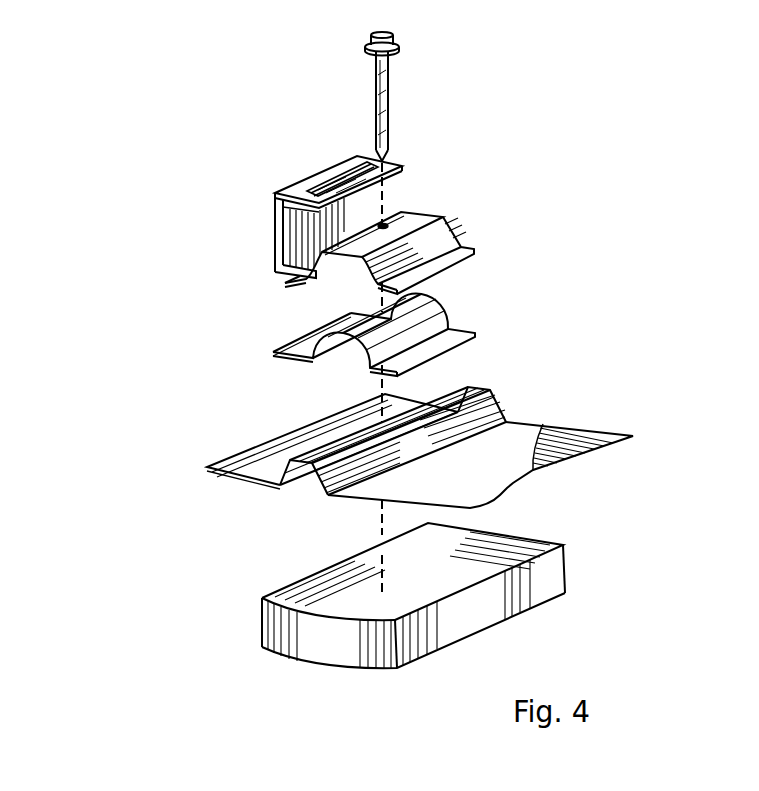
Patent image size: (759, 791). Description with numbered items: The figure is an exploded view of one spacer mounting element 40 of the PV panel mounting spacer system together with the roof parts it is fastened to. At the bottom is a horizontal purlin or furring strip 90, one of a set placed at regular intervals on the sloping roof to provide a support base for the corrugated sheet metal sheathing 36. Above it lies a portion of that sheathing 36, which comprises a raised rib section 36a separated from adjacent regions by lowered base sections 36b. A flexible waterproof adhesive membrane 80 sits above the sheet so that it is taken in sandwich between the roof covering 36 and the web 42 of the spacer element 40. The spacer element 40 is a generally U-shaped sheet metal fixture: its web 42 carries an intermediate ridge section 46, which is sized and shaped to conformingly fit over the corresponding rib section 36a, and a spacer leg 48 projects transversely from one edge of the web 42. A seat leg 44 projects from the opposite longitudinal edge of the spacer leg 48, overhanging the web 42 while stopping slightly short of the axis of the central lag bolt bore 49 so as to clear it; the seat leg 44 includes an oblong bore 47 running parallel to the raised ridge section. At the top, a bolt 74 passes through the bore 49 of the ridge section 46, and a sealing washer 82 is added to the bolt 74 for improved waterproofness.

The corrugated sheet metal sheathing 36 is at (401, 432).
The raised rib section 36a is at (500, 388).
The lowered base section 36b is at (240, 452).
The spacer mounting element 40 is at (260, 204).
The web 42 is at (439, 230).
The seat leg 44 is at (288, 189).
The intermediate ridge section 46 is at (432, 235).
The oblong bore 47 is at (340, 178).
The spacer leg 48 is at (289, 247).
The central lag bolt bore 49 is at (385, 224).
The bolt 74 is at (442, 84).
The flexible waterproof adhesive membrane 80 is at (430, 330).
The sealing washer 82 is at (398, 46).
The furring strip 90 is at (429, 587).